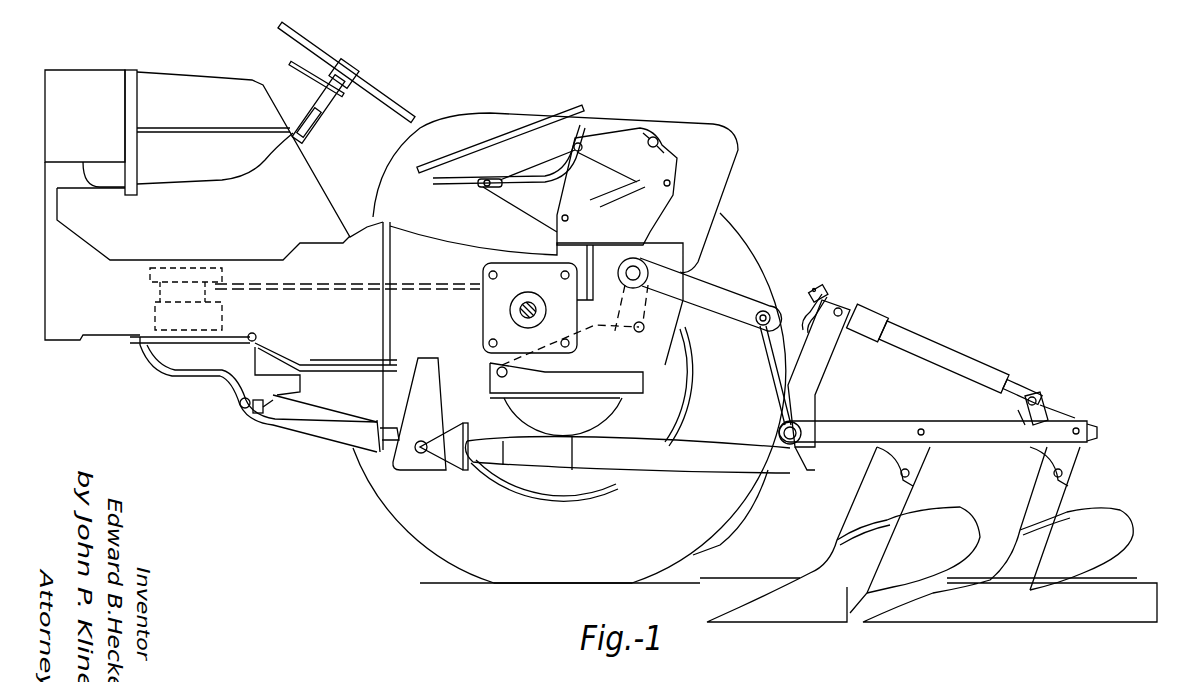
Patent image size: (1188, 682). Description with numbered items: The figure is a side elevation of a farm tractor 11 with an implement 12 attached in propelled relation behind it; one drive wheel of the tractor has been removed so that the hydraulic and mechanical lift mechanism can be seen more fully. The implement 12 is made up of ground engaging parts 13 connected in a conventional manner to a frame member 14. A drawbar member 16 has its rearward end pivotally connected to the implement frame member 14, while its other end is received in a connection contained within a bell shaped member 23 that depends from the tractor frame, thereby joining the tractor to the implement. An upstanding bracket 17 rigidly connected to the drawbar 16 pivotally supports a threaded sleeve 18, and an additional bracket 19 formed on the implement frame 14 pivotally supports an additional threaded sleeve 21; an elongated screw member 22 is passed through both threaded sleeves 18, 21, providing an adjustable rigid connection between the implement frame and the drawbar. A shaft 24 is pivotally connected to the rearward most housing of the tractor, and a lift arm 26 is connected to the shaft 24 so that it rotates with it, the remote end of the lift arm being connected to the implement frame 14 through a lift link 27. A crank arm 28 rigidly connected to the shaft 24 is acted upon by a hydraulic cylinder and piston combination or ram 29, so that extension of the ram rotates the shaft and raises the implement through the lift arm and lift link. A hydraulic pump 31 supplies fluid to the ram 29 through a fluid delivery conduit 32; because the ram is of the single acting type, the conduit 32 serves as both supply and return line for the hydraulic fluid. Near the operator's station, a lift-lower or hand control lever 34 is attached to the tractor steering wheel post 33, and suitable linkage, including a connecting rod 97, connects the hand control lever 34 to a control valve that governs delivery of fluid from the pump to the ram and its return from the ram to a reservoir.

The farm tractor 11 is at (211, 65).
The implement 12 is at (1110, 421).
The ground engaging parts 13 is at (836, 557).
The frame member 14 is at (938, 425).
The drawbar member 16 is at (668, 470).
The upstanding bracket 17 is at (815, 372).
The threaded sleeve 18 is at (856, 318).
The additional bracket 19 is at (1016, 412).
The additional threaded sleeve 21 is at (1045, 408).
The elongated screw member 22 is at (887, 332).
The bell shaped member 23 is at (442, 465).
The shaft 24 is at (645, 270).
The lift arm 26 is at (712, 297).
The lift link 27 is at (774, 372).
The crank arm 28 is at (650, 324).
The hydraulic ram 29 is at (552, 368).
The hydraulic pump 31 is at (222, 315).
The fluid delivery conduit 32 is at (310, 290).
The steering wheel post 33 is at (333, 106).
The hand control lever 34 is at (288, 62).
The connecting rod 97 is at (312, 132).